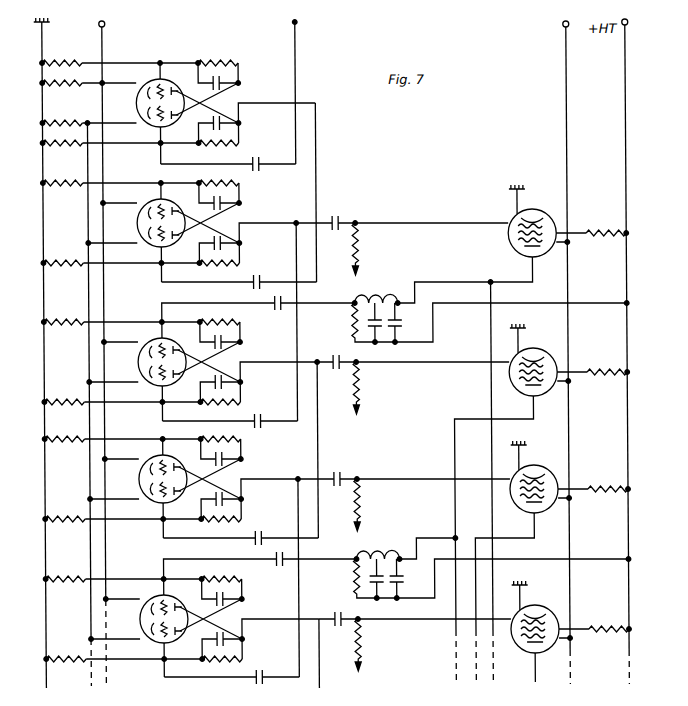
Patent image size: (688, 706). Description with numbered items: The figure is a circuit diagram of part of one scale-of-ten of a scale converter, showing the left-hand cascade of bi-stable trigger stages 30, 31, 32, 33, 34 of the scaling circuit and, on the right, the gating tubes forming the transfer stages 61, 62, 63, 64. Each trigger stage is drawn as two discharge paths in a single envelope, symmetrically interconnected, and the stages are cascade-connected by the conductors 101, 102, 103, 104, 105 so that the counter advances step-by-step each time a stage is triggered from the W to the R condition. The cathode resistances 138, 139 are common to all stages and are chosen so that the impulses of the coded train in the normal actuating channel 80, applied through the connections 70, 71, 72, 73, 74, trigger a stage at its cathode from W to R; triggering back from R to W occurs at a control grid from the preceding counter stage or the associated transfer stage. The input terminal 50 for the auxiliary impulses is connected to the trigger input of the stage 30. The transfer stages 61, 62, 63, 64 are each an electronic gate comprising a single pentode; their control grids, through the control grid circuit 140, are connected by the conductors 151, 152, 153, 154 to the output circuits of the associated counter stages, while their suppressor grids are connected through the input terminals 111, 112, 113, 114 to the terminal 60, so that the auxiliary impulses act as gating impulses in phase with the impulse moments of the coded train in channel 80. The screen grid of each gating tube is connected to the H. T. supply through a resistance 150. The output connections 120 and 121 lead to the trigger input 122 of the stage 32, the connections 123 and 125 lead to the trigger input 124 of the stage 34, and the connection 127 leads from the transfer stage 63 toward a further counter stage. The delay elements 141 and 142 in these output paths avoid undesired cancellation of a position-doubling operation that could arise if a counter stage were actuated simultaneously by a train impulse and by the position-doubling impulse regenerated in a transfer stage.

The bi-stable trigger stage 30 is at (246, 103).
The bi-stable trigger stage 31 is at (237, 223).
The bi-stable trigger stage 32 is at (248, 362).
The bi-stable trigger stage 33 is at (239, 479).
The bi-stable trigger stage 34 is at (250, 619).
The input terminal for auxiliary impulses 50 is at (287, 84).
The terminal 60 is at (556, 328).
The transfer stage 61 is at (532, 221).
The transfer stage 62 is at (533, 360).
The transfer stage 63 is at (534, 477).
The transfer stage 64 is at (535, 631).
The connection from actuating channel 70 is at (144, 113).
The connection from actuating channel 71 is at (145, 232).
The connection from actuating channel 72 is at (146, 371).
The connection from actuating channel 73 is at (147, 488).
The connection from actuating channel 74 is at (148, 628).
The normal actuating channel 80 is at (114, 345).
The conductor 101 is at (330, 192).
The conductor 102 is at (312, 321).
The conductor 103 is at (330, 449).
The conductor 104 is at (314, 577).
The conductor 105 is at (333, 653).
The input terminal of transfer stage 111 is at (568, 242).
The input terminal of transfer stage 112 is at (568, 381).
The input terminal of transfer stage 113 is at (568, 498).
The input terminal of transfer stage 114 is at (568, 638).
The output connection 120 is at (510, 270).
The output connection 121 is at (481, 456).
The trigger input 122 is at (258, 305).
The output connection 123 is at (493, 513).
The trigger input 124 is at (259, 561).
The output connection 125 is at (528, 657).
The output connection 127 is at (505, 571).
The cathode resistance 138 is at (88, 90).
The cathode resistance 139 is at (90, 397).
The control grid circuit 140 is at (358, 436).
The delay element 141 is at (491, 312).
The delay element 142 is at (492, 568).
The resistance 150 is at (593, 423).
The conductor 151 is at (402, 217).
The conductor 152 is at (413, 357).
The conductor 153 is at (404, 474).
The conductor 154 is at (415, 614).